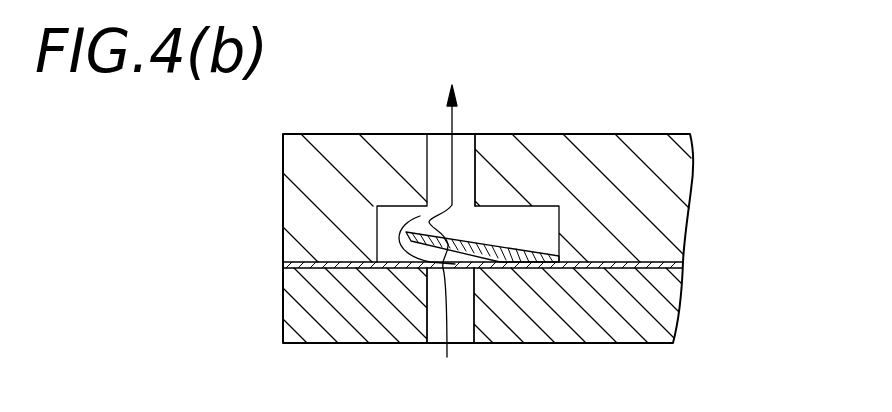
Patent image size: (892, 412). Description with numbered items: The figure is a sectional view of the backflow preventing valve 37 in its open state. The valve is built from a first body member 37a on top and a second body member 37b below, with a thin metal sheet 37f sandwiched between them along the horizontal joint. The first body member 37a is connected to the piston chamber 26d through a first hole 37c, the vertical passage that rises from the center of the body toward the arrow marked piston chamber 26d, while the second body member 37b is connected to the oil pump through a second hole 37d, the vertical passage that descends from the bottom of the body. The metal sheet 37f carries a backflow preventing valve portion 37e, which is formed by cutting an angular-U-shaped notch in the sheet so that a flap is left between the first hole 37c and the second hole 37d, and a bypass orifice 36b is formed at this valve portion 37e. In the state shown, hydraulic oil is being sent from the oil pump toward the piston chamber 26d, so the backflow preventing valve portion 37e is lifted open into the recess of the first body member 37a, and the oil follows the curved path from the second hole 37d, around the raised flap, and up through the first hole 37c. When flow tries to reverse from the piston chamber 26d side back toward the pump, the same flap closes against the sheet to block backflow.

The piston chamber 26d is at (451, 202).
The bypass orifice 36b is at (420, 216).
The backflow preventing valve 37 is at (565, 126).
The first body member 37a is at (647, 157).
The second body member 37b is at (628, 313).
The first hole 37c is at (438, 147).
The second hole 37d is at (463, 323).
The backflow preventing valve portion 37e is at (479, 260).
The metal sheet 37f is at (657, 263).